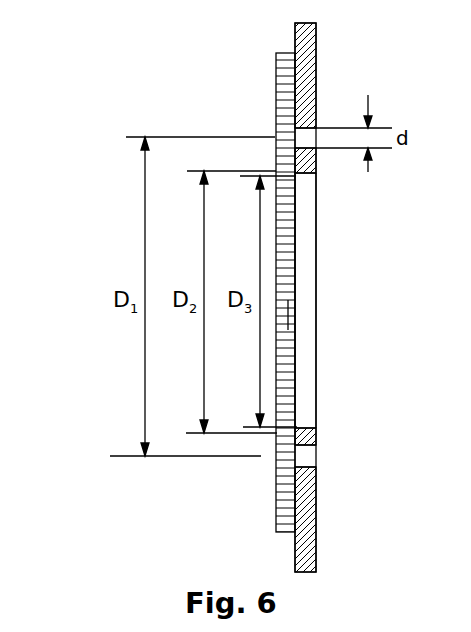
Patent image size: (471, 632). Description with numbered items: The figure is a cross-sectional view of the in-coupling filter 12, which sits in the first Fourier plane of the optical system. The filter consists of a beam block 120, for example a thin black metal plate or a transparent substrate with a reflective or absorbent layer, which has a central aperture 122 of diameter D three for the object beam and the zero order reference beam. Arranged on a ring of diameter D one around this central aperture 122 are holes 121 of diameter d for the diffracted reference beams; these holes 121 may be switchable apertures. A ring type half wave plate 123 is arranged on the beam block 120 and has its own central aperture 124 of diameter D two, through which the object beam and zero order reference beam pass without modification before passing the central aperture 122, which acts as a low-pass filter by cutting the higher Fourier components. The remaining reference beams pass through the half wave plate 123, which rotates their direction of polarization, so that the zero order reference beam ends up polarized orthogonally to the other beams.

The in-coupling filter 12 is at (110, 87).
The beam block 120 is at (318, 70).
The holes 121 is at (317, 143).
The central aperture 122 is at (315, 292).
The ring type half wave plate 123 is at (275, 105).
The central aperture 124 is at (288, 315).